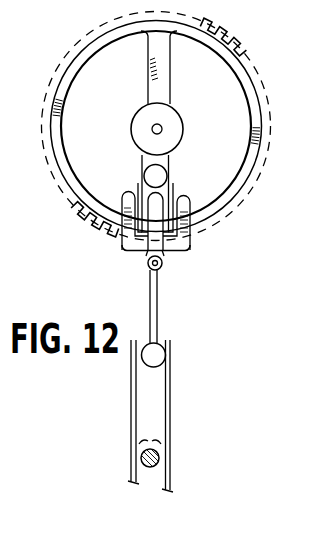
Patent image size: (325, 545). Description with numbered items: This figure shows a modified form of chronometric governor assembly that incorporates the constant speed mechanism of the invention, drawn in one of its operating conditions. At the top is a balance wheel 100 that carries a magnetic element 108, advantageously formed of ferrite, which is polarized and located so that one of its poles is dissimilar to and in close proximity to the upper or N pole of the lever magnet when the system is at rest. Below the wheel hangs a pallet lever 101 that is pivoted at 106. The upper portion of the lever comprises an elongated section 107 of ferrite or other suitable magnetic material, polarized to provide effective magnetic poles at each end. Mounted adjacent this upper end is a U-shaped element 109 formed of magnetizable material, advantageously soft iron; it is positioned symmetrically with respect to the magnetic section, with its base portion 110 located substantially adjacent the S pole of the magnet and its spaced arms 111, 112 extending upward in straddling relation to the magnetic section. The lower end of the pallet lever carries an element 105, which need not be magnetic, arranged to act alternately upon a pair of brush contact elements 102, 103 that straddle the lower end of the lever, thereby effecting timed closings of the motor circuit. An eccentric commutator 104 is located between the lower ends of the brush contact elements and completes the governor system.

The balance wheel 100 is at (257, 104).
The pallet lever 101 is at (150, 297).
The brush contact element 102 is at (135, 385).
The brush contact element 103 is at (171, 411).
The eccentric commutator 104 is at (161, 456).
The element 105 is at (160, 352).
The pivot 106 is at (148, 264).
The elongated section 107 is at (152, 222).
The magnetic element 108 is at (166, 176).
The U-shaped element 109 is at (116, 251).
The base portion 110 is at (177, 252).
The arm 111 is at (126, 196).
The arm 112 is at (187, 200).